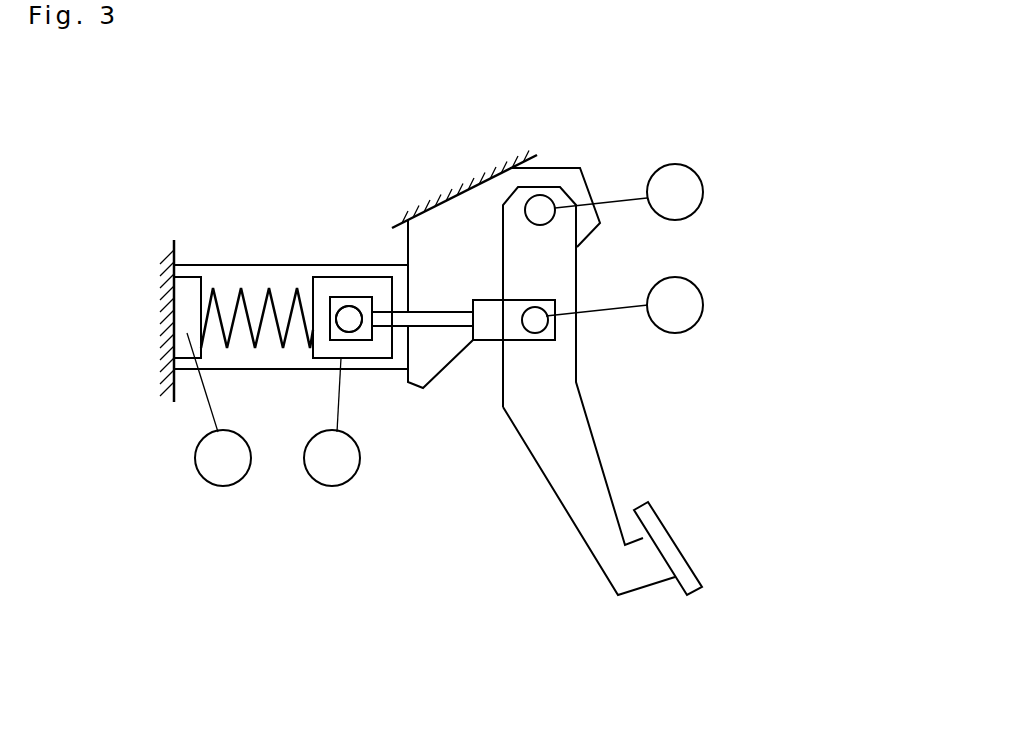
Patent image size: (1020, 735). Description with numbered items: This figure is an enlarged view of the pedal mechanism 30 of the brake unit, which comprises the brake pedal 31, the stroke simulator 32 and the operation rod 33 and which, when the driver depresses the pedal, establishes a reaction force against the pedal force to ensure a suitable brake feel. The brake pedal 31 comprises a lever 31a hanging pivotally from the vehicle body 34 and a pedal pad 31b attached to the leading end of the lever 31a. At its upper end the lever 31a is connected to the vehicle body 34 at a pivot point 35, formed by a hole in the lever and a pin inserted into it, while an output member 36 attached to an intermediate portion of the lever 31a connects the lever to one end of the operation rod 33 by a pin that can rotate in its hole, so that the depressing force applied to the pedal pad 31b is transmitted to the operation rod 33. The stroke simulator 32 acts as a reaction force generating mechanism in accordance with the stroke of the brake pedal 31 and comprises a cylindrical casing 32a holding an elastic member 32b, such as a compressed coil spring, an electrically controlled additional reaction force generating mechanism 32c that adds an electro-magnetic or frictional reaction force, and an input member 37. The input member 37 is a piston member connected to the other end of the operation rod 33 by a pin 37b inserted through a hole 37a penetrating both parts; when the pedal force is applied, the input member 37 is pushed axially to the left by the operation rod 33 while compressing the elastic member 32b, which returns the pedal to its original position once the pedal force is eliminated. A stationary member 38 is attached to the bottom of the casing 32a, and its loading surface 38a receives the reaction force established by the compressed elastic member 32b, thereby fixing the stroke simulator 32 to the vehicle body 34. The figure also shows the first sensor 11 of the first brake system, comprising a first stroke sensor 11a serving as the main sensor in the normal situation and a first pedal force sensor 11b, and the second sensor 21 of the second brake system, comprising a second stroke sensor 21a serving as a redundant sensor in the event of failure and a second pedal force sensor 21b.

The pedal mechanism 30 is at (257, 134).
The brake pedal 31 is at (693, 383).
The lever 31a is at (562, 405).
The pedal pad 31b is at (652, 517).
The stroke simulator 32 is at (352, 197).
The casing 32a is at (235, 265).
The elastic member 32b is at (280, 293).
The additional reaction force generating mechanism 32c is at (345, 280).
The operation rod 33 is at (434, 323).
The vehicle body 34 is at (165, 320).
The pivot point 35 is at (541, 200).
The output member 36 is at (540, 326).
The input member 37 is at (363, 269).
The hole 37a is at (352, 330).
The pin 37b is at (371, 372).
The stationary member 38 is at (185, 294).
The loading surface 38a is at (207, 288).
The first sensor 11 is at (775, 180).
The first stroke sensor 11a is at (703, 194).
The first pedal force sensor 11b is at (703, 306).
The second sensor 21 is at (342, 546).
The second stroke sensor 21a is at (327, 487).
The second pedal force sensor 21b is at (227, 487).